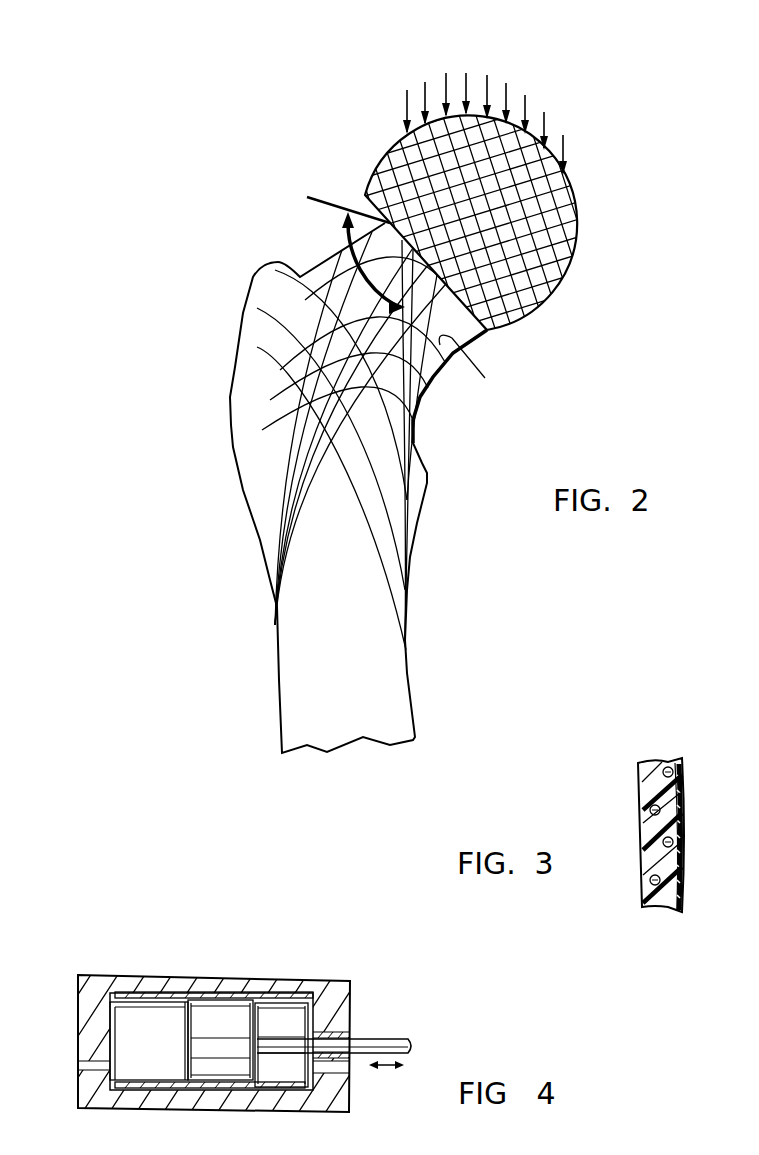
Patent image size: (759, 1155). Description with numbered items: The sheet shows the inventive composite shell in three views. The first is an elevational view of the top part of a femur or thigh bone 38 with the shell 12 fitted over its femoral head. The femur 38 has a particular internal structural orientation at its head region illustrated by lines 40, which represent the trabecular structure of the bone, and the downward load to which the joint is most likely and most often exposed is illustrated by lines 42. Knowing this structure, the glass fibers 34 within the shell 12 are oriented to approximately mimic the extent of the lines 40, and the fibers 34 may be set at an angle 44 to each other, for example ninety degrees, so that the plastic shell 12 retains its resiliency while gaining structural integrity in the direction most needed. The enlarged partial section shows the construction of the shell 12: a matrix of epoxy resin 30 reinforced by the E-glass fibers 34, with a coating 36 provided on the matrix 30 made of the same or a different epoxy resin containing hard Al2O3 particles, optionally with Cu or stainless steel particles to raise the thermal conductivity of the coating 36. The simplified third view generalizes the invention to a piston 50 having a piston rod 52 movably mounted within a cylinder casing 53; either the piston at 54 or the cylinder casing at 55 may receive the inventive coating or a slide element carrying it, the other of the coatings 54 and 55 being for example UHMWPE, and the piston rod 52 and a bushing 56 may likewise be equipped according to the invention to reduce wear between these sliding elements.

In FIG. 2, the shell 12 is at (465, 225).
In FIG. 3, the shell 12 is at (650, 861).
In FIG. 3, the matrix of epoxy resin 30 is at (657, 907).
In FIG. 2, the E-glass fibers 34 is at (527, 247).
In FIG. 3, the E-glass fibers 34 is at (672, 840).
In FIG. 3, the coating 36 is at (680, 910).
In FIG. 2, the femur 38 is at (390, 653).
In FIG. 2, the lines 40 is at (380, 463).
In FIG. 2, the lines 42 is at (507, 90).
In FIG. 2, the angle 44 is at (347, 242).
In FIG. 4, the piston 50 is at (183, 1020).
In FIG. 4, the piston rod 52 is at (380, 1047).
In FIG. 4, the cylinder casing 53 is at (237, 985).
In FIG. 4, the coating on the piston 54 is at (242, 1017).
In FIG. 4, the coating on the cylinder casing 55 is at (180, 990).
In FIG. 4, the bushing 56 is at (347, 1035).